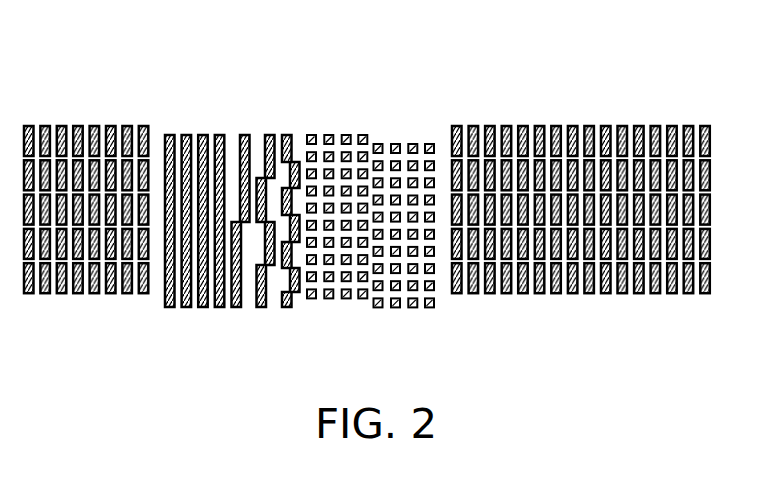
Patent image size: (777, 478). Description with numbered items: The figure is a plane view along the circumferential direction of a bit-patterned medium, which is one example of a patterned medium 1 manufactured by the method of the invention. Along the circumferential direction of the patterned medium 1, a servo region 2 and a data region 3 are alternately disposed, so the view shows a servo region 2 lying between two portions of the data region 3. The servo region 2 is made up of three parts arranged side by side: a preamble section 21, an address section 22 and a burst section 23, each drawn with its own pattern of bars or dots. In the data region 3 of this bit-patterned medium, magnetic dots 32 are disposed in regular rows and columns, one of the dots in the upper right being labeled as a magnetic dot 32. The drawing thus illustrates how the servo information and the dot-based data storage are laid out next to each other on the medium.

The patterned medium 1 is at (96, 82).
The servo region 2 is at (430, 118).
The data region 3 is at (710, 118).
The preamble section 21 is at (223, 313).
The address section 22 is at (297, 313).
The burst section 23 is at (437, 313).
The magnetic dot 32 is at (710, 143).